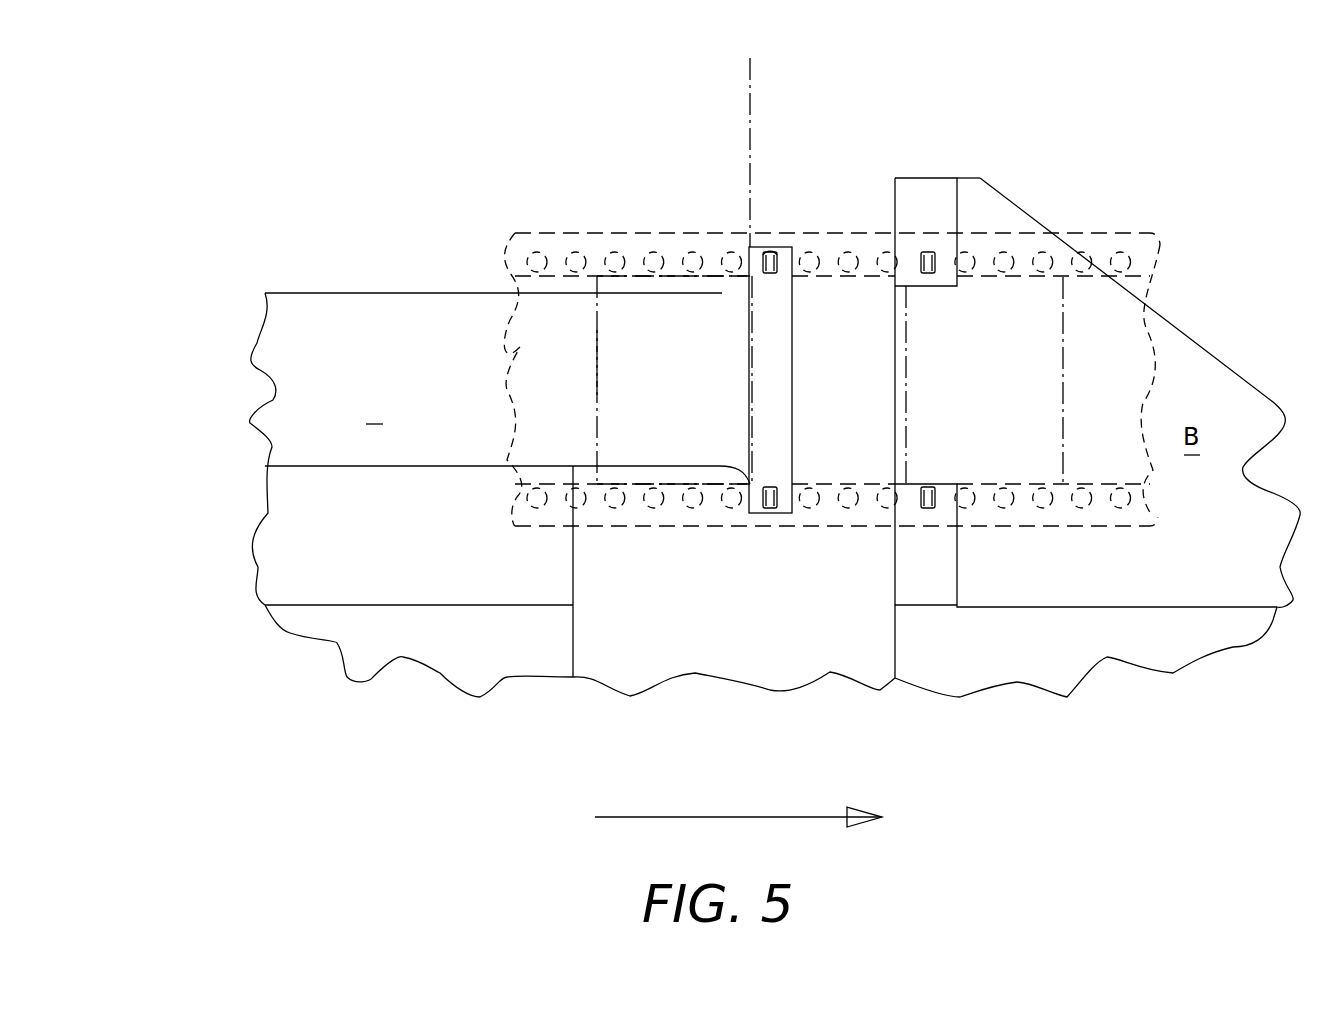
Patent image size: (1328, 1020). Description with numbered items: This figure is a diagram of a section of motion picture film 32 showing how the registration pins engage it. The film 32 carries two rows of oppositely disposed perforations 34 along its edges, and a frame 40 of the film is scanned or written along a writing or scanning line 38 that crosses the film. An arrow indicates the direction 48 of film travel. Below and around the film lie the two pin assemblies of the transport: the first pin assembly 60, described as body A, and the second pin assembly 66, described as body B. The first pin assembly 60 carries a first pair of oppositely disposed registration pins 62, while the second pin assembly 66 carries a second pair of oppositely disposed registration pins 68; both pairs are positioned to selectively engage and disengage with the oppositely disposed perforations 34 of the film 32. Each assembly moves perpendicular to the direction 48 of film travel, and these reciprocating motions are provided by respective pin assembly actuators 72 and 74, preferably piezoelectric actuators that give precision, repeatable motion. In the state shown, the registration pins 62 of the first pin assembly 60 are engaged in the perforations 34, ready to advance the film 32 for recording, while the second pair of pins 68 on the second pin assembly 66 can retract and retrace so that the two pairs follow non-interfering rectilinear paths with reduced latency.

The motion picture film 32 is at (837, 233).
The perforations 34 is at (612, 252).
The writing or scanning line 38 is at (750, 117).
The frame 40 is at (597, 360).
The direction of film travel 48 is at (687, 817).
The first pin assembly 60 is at (282, 522).
The first pair of registration pins 62 is at (771, 487).
The second pin assembly 66 is at (1217, 372).
The second pair of registration pins 68 is at (929, 487).
The pin assembly actuator 72 is at (688, 417).
The pin assembly actuator 74 is at (925, 190).